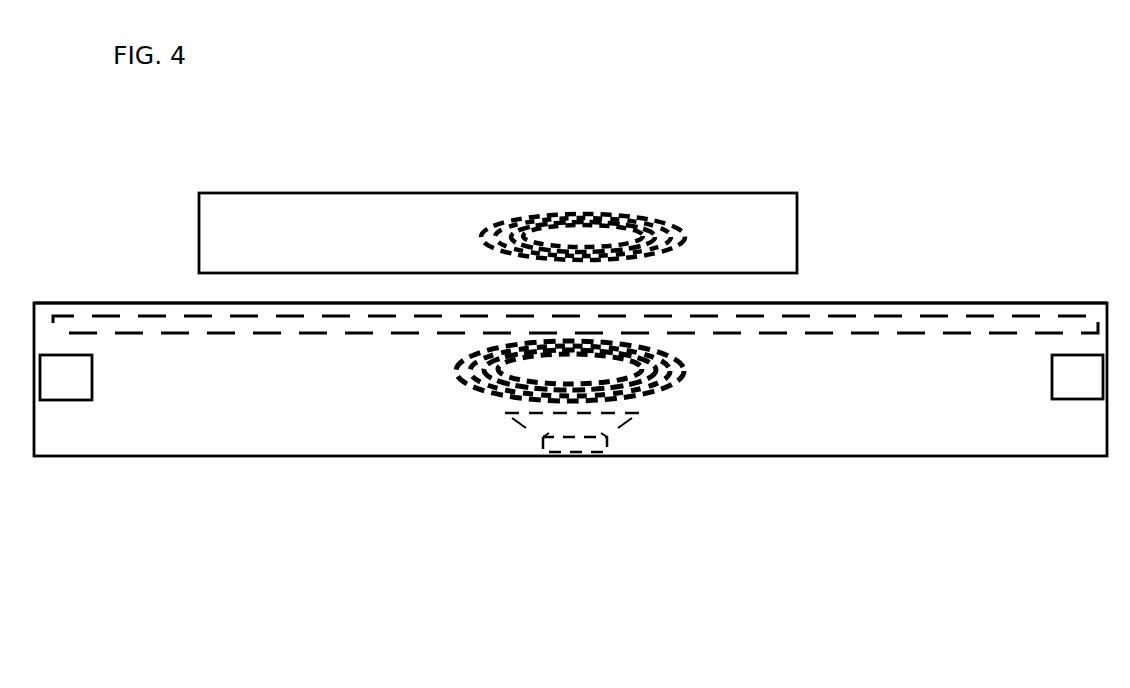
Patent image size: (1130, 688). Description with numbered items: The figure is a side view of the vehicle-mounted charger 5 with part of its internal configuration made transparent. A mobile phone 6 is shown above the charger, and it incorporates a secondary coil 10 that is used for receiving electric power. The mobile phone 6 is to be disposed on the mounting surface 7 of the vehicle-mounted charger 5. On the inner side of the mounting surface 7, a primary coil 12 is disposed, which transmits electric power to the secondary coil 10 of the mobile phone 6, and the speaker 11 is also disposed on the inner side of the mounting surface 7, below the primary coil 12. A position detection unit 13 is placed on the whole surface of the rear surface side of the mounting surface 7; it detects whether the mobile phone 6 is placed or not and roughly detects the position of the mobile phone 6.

The vehicle-mounted charger 5 is at (148, 457).
The mobile phone 6 is at (199, 233).
The mounting surface 7 is at (995, 303).
The secondary coil 10 is at (604, 214).
The speaker 11 is at (608, 448).
The primary coil 12 is at (470, 357).
The position detection unit 13 is at (893, 333).